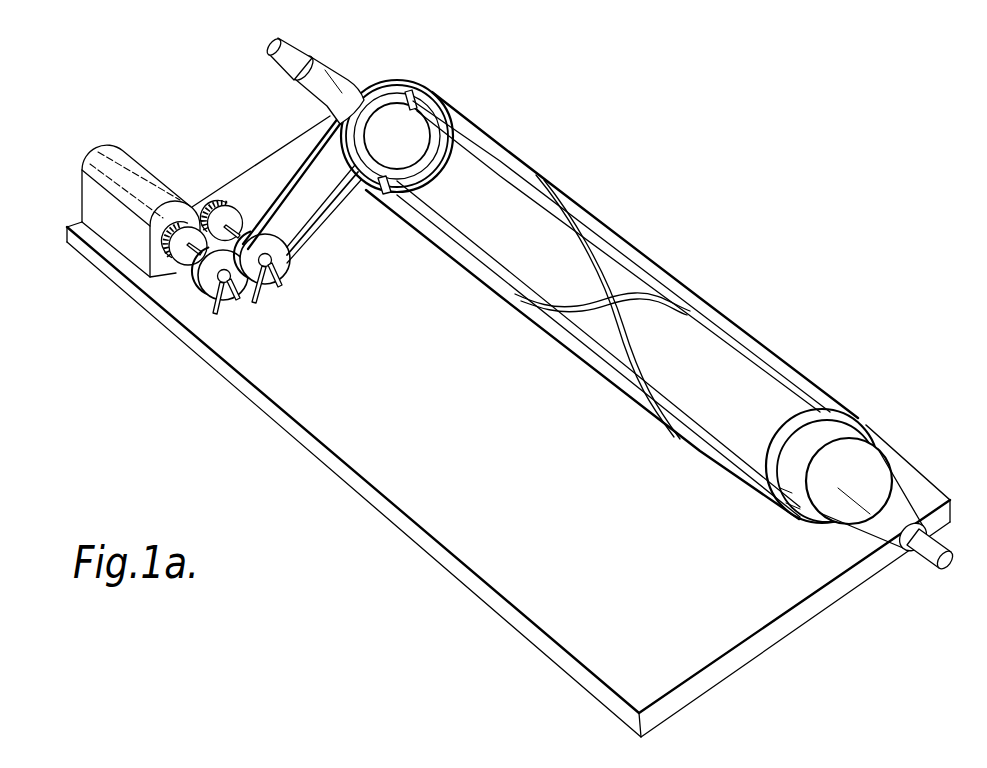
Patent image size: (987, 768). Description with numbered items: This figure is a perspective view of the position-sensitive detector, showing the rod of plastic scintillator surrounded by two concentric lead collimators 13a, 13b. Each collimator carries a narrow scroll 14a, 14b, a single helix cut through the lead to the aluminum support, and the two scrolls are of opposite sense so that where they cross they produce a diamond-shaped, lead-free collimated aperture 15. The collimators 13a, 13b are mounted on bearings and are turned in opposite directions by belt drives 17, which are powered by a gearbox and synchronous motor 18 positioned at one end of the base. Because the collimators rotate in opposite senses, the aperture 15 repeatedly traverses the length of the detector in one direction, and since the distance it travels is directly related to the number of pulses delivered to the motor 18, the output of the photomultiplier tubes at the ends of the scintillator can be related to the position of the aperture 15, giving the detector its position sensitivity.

The lead collimator 13a is at (620, 372).
The lead collimator 13b is at (567, 352).
The scroll 14a is at (658, 297).
The scroll 14b is at (562, 200).
The aperture 15 is at (600, 307).
The belt drive 17 is at (292, 196).
The synchronous motor 18 is at (115, 232).